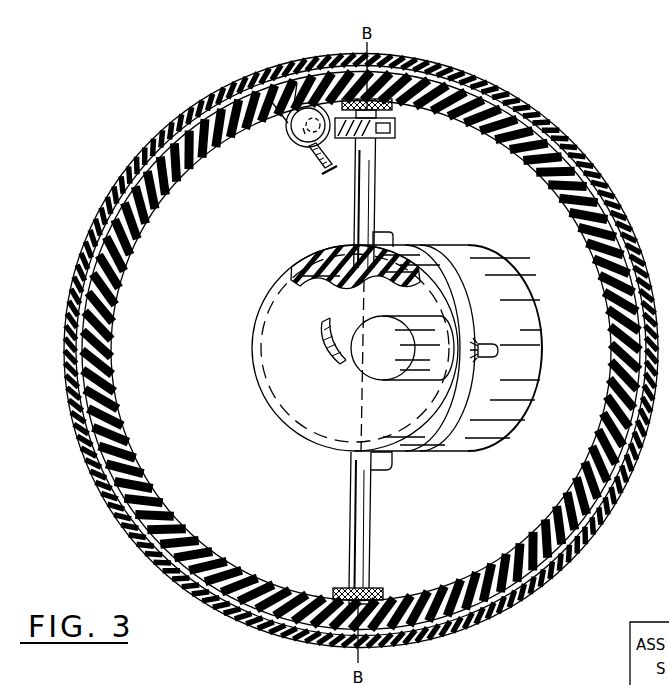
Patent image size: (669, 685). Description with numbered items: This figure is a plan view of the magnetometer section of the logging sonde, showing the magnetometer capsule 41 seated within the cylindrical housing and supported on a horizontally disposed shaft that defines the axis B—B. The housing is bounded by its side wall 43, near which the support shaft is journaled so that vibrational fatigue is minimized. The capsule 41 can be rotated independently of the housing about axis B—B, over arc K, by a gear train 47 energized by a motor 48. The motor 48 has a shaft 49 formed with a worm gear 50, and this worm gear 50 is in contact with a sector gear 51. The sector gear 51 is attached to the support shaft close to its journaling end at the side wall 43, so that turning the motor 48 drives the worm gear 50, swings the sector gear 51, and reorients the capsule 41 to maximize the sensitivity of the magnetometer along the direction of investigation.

The magnetometer capsule 41 is at (490, 428).
The side wall 43 is at (115, 300).
The gear train 47 is at (282, 145).
The motor 48 is at (302, 118).
The shaft 49 is at (297, 152).
The worm gear 50 is at (306, 148).
The sector gear 51 is at (344, 140).